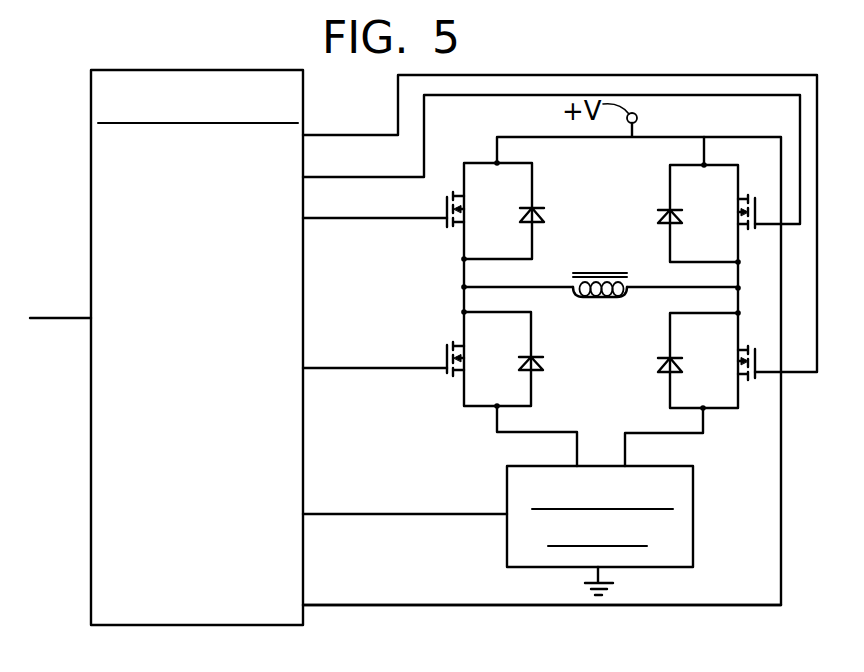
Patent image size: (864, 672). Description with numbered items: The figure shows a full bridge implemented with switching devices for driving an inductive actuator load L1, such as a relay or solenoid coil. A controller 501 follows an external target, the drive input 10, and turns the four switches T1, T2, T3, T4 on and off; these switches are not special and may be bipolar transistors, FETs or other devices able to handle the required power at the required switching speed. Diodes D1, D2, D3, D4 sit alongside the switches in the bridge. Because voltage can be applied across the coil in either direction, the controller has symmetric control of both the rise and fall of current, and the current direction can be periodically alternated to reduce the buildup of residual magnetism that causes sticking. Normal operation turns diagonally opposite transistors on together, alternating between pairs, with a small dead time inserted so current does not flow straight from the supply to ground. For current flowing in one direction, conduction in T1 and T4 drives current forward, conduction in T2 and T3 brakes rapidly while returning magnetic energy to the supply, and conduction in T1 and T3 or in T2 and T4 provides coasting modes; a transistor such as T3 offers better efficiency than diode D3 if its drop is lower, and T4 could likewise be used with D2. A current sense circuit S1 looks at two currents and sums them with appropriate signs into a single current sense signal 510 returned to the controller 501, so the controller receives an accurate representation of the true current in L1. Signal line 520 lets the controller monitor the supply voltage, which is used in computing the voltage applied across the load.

The controller 501 is at (230, 70).
The drive input 10 is at (80, 317).
The current sense signal 510 is at (312, 514).
The signal line 520 is at (312, 605).
The switch T1 is at (466, 207).
The switch T2 is at (466, 356).
The switch T3 is at (736, 210).
The switch T4 is at (736, 358).
The diode D1 is at (535, 215).
The diode D2 is at (533, 365).
The diode D3 is at (665, 216).
The diode D4 is at (665, 366).
The inductive actuator load L1 is at (593, 272).
The current sense circuit S1 is at (532, 466).